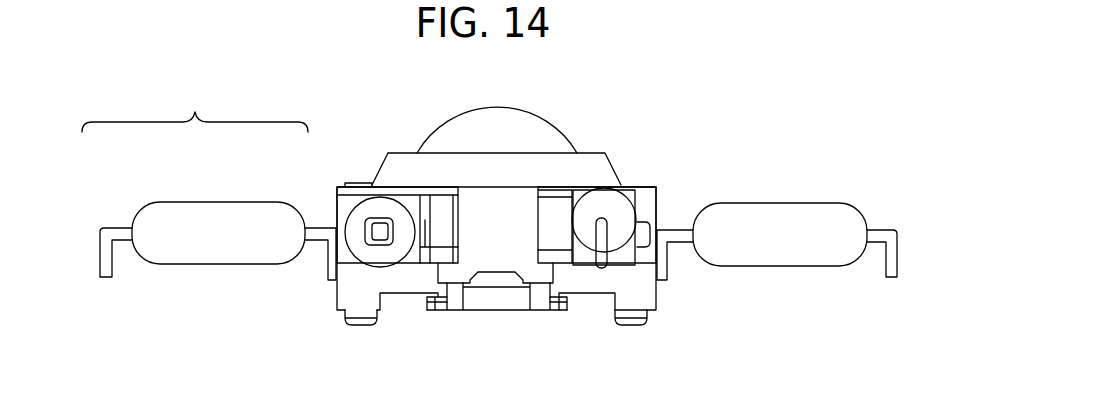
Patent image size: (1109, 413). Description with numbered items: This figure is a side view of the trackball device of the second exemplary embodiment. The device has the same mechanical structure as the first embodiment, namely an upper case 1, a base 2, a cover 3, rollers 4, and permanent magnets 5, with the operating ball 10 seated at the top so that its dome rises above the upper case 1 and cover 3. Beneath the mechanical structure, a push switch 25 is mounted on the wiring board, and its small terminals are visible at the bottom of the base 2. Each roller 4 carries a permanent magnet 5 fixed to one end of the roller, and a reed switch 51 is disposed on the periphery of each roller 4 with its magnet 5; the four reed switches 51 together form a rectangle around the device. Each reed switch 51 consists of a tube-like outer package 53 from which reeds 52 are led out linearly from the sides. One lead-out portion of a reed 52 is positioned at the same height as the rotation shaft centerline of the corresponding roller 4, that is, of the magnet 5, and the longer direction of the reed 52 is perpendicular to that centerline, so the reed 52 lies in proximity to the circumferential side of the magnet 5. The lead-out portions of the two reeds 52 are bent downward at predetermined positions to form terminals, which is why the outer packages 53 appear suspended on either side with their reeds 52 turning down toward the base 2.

The upper case 1 is at (592, 162).
The base 2 is at (490, 306).
The cover 3 is at (360, 185).
The roller 4 is at (373, 230).
The permanent magnet 5 is at (397, 252).
The operating ball 10 is at (487, 122).
The push switch 25 is at (562, 303).
The reed switch 51 is at (489, 177).
The reed 52 is at (125, 233).
The tube-like outer package 53 is at (212, 215).